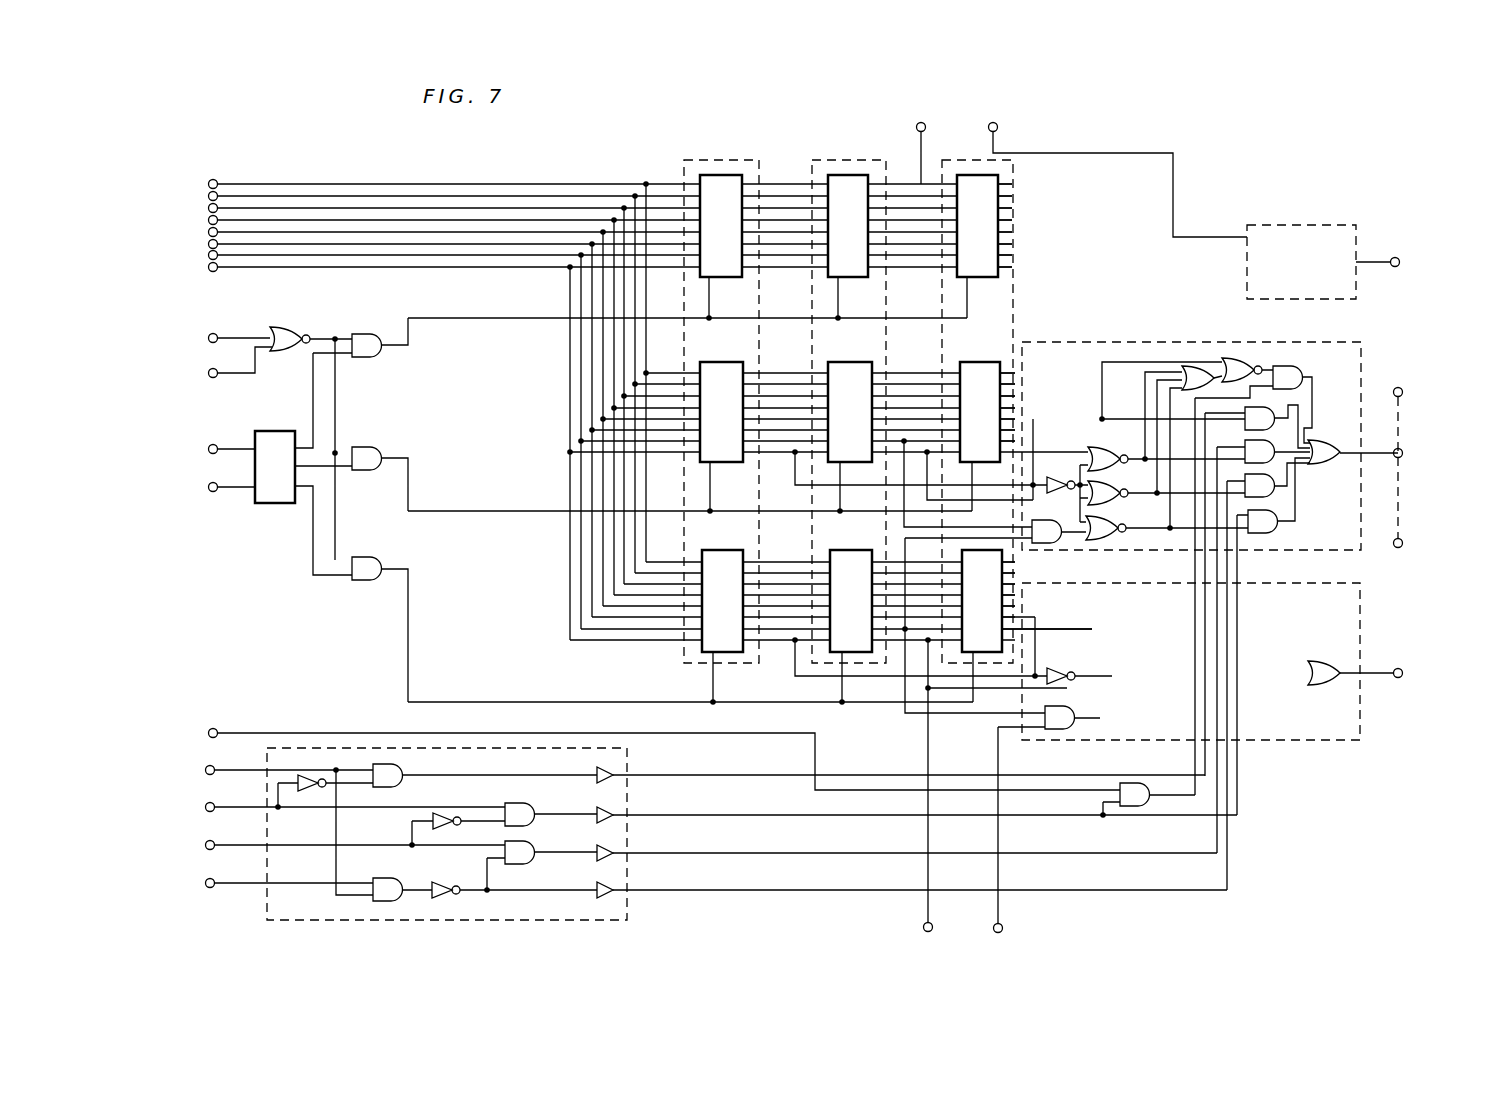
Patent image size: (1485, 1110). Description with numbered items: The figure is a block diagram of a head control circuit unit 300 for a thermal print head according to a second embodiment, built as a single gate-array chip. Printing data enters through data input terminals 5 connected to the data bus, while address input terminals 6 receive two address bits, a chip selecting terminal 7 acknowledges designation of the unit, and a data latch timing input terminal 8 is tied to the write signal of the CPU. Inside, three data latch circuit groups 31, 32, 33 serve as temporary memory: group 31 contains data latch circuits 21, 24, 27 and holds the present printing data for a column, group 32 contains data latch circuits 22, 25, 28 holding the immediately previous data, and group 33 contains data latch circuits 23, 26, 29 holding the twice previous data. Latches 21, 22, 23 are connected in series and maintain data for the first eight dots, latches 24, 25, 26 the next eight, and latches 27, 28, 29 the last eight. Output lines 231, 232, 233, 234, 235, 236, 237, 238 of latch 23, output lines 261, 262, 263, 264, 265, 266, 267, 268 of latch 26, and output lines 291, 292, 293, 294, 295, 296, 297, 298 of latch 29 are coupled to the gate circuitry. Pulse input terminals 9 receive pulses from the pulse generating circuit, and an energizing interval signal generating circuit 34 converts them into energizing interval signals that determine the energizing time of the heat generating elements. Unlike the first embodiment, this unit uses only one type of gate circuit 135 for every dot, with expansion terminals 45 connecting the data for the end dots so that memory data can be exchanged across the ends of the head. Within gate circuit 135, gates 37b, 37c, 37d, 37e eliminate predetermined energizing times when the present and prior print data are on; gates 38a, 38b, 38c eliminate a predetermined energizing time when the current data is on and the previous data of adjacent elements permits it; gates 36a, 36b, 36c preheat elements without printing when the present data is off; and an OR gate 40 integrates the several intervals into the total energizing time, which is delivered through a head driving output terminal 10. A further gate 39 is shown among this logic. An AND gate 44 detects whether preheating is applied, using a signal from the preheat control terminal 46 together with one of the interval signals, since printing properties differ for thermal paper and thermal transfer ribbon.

The data input terminals 5 is at (186, 182).
The address input terminals 6 is at (183, 437).
The chip selecting terminal 7 is at (198, 328).
The data latch timing input terminal 8 is at (203, 363).
The pulse input terminals 9 is at (176, 752).
The head driving output terminal 10 is at (1440, 232).
The data latch circuit 21 is at (711, 239).
The data latch circuit 22 is at (838, 239).
The data latch circuit 23 is at (967, 239).
The data latch circuit 24 is at (711, 425).
The data latch circuit 25 is at (840, 425).
The data latch circuit 26 is at (970, 425).
The data latch circuit 27 is at (712, 613).
The data latch circuit 28 is at (841, 613).
The data latch circuit 29 is at (972, 613).
The data latch circuit group 31 is at (730, 660).
The data latch circuit group 32 is at (826, 664).
The data latch circuit group 33 is at (992, 665).
The energizing interval signal generating circuit 34 is at (622, 918).
The gate 36a is at (1195, 367).
The gate 36b is at (1238, 358).
The gate 36c is at (1290, 366).
The gate 37b is at (1105, 456).
The gate 37c is at (1108, 493).
The gate 37d is at (1252, 450).
The gate 37e is at (1257, 485).
The gate 38a is at (1060, 516).
The gate 38b is at (1118, 527).
The gate 38c is at (1270, 530).
The AND gate 39 is at (1258, 410).
The OR gate 40 is at (1325, 466).
The AND gate 44 is at (1143, 806).
The expansion terminals 45 is at (996, 122).
The preheat control terminal 46 is at (172, 733).
The gate circuit 135 is at (1318, 215).
The output line 231 is at (1012, 184).
The output line 232 is at (1012, 196).
The output line 233 is at (1012, 208).
The output line 234 is at (1012, 220).
The output line 235 is at (1012, 232).
The output line 236 is at (1012, 244).
The output line 237 is at (1012, 255).
The output line 238 is at (1012, 267).
The output line 261 is at (1015, 373).
The output line 262 is at (1015, 384).
The output line 263 is at (1015, 396).
The output line 264 is at (1015, 408).
The output line 265 is at (1015, 419).
The output line 266 is at (1015, 430).
The output line 267 is at (1015, 441).
The output line 268 is at (1010, 470).
The output line 291 is at (1015, 560).
The output line 292 is at (1015, 573).
The output line 293 is at (1015, 584).
The output line 294 is at (1015, 595).
The output line 295 is at (1015, 606).
The output line 296 is at (1015, 617).
The output line 297 is at (1015, 629).
The output line 298 is at (1080, 640).
The head control circuit unit 300 is at (1154, 902).